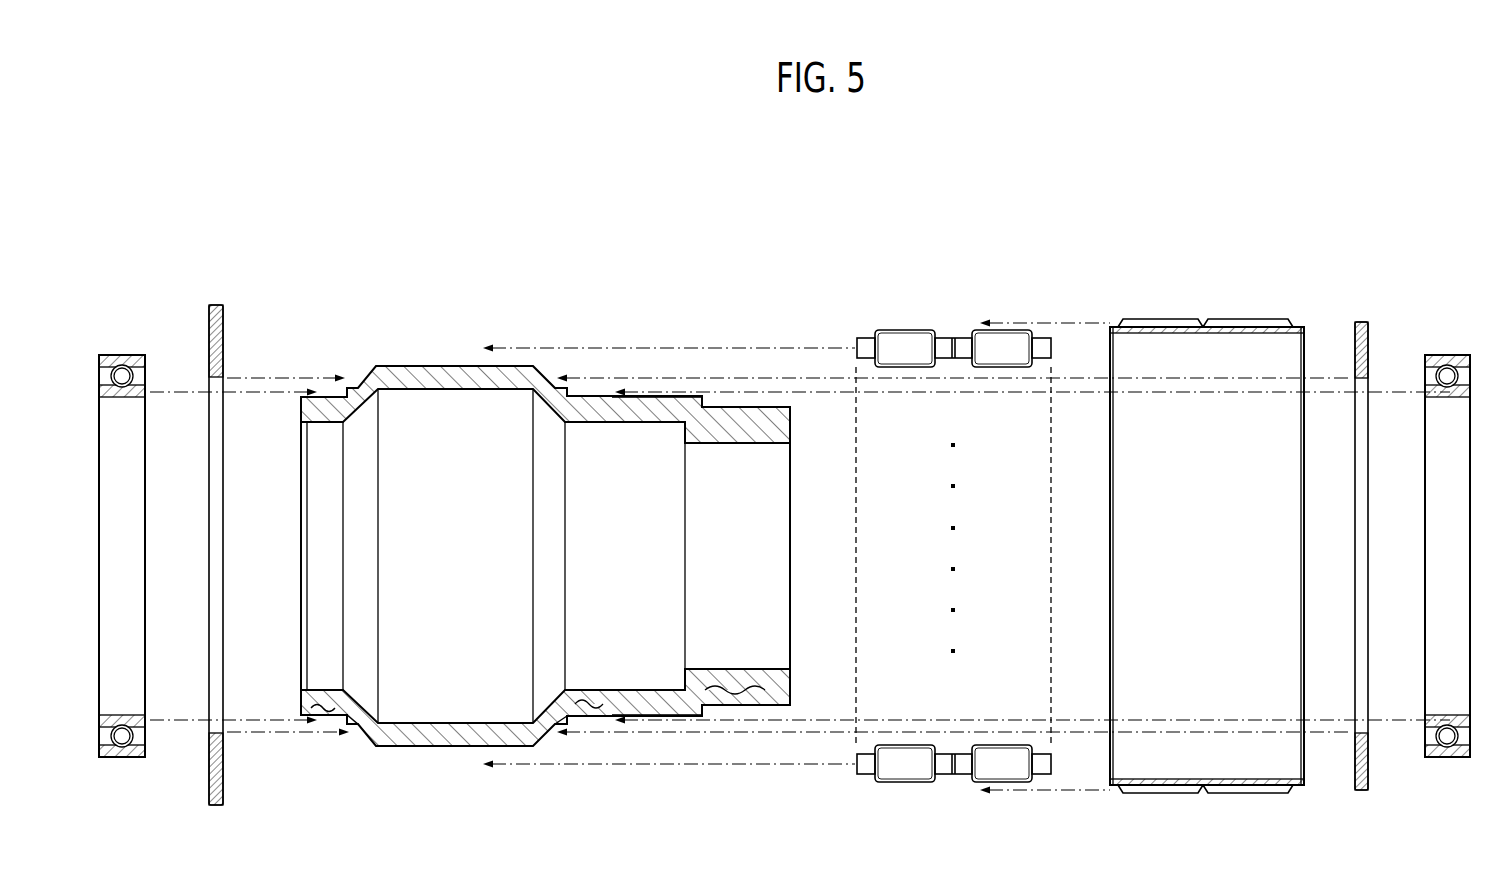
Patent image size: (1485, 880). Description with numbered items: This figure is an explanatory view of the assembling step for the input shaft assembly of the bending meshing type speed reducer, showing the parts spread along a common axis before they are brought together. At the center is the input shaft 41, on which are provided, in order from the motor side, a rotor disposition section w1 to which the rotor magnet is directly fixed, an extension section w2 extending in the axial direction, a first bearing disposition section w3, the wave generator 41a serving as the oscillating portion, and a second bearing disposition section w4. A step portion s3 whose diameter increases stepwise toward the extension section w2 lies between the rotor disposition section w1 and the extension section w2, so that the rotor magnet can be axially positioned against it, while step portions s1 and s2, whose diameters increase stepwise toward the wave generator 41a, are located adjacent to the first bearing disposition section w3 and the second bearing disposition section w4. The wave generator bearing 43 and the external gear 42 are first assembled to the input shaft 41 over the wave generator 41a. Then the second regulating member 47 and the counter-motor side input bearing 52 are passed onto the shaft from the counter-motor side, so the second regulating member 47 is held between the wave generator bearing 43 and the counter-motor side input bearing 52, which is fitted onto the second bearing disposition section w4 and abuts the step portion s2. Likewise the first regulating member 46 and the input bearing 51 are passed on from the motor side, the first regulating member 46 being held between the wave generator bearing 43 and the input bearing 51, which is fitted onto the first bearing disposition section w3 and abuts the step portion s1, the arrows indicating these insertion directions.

The input shaft 41 is at (322, 571).
The wave generator 41a is at (456, 736).
The external gear 42 is at (1226, 302).
The wave generator bearing 43 is at (950, 306).
The first regulating member 46 is at (1361, 321).
The second regulating member 47 is at (215, 304).
The input bearing 51 is at (1443, 360).
The counter-motor side input bearing 52 is at (121, 366).
The step portion s1 is at (558, 720).
The step portion s2 is at (351, 720).
The step portion s3 is at (694, 708).
The rotor disposition section w1 is at (745, 690).
The extension section w2 is at (657, 696).
The first bearing disposition section w3 is at (588, 700).
The second bearing disposition section w4 is at (323, 700).